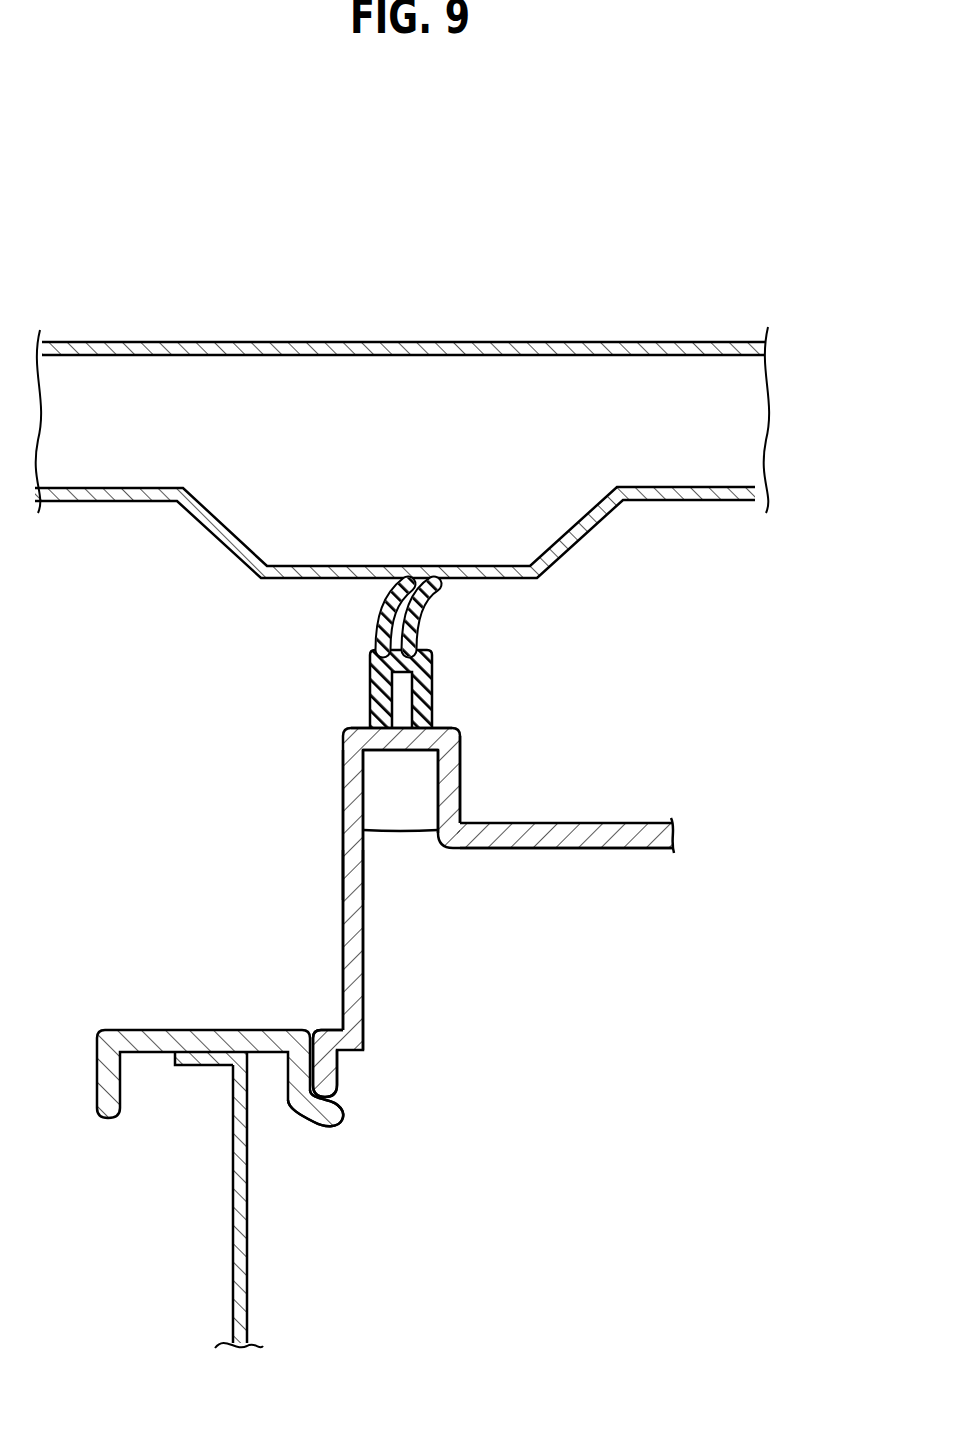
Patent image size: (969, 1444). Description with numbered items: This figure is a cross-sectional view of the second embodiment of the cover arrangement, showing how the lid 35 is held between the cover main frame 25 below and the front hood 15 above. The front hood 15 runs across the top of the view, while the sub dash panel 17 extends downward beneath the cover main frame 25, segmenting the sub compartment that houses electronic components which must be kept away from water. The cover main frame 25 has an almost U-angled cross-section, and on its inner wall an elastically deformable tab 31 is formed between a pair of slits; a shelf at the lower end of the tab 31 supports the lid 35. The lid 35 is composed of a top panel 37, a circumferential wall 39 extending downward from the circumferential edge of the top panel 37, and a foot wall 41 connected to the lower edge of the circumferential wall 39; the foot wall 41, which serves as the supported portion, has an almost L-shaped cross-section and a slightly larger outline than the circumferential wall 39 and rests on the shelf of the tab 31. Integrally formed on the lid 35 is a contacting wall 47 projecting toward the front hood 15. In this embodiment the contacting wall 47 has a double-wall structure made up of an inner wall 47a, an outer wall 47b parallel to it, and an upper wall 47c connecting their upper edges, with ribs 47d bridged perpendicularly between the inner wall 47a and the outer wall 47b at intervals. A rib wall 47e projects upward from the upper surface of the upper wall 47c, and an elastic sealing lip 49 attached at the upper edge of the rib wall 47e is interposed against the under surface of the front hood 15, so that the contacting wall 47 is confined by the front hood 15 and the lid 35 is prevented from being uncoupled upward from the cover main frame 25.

The front hood 15 is at (482, 342).
The sub dash panel 17 is at (233, 1200).
The cover main frame 25 is at (180, 1028).
The tab 31 is at (313, 1112).
The lid 35 is at (591, 822).
The top panel 37 is at (617, 848).
The circumferential wall 39 is at (350, 920).
The foot wall 41 is at (327, 1043).
The contacting wall 47 is at (336, 773).
The inner wall 47a is at (452, 793).
The outer wall 47b is at (347, 822).
The upper wall 47c is at (405, 740).
The ribs 47d is at (402, 803).
The rib wall 47e is at (430, 693).
The sealing lip 49 is at (406, 655).